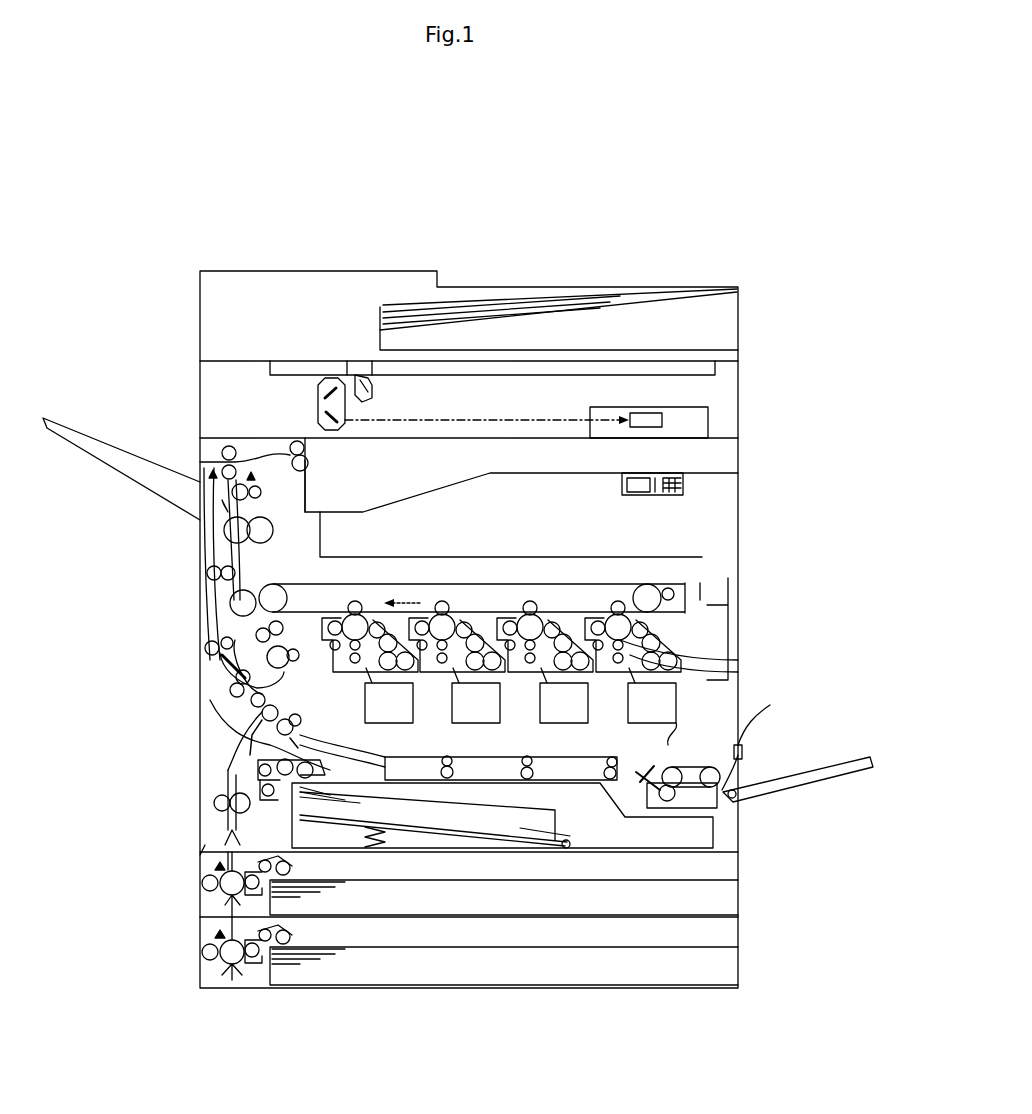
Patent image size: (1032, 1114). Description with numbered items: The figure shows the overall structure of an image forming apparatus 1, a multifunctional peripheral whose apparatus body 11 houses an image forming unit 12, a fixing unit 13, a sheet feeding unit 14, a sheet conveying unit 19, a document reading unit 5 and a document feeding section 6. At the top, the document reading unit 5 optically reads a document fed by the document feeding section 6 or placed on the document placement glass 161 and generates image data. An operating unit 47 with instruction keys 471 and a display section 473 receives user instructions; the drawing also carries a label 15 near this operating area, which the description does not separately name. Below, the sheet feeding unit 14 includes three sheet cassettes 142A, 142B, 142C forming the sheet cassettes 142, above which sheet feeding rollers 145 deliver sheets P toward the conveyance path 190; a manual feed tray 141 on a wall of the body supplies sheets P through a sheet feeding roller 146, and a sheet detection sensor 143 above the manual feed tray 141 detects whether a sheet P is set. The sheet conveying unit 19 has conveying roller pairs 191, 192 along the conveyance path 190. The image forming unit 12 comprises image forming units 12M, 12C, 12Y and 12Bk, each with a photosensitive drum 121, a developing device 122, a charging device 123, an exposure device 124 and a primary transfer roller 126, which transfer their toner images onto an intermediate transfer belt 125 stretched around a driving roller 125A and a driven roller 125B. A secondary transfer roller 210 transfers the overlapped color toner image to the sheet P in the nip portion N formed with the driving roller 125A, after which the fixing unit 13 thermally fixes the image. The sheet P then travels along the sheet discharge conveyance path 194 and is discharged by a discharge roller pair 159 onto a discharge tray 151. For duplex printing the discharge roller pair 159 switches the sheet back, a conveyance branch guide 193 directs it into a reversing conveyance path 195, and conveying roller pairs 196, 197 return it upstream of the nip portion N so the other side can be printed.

The image forming apparatus 1 is at (815, 343).
The document reading unit 5 is at (185, 383).
The document feeding section 6 is at (559, 281).
The document placement glass 161 is at (607, 358).
The apparatus body 11 is at (745, 472).
The discharge tray 151 is at (340, 505).
The operation panel 15 is at (671, 469).
The display section 473 is at (628, 480).
The instruction keys 471 is at (672, 478).
The operating unit 47 is at (688, 487).
The image forming unit 12 is at (540, 573).
The intermediate transfer belt 125 is at (497, 571).
The driving roller 125A is at (298, 568).
The driven roller 125B is at (655, 590).
The primary transfer roller 126 is at (614, 604).
The image forming unit for black 12Bk is at (360, 604).
The image forming unit for yellow 12Y is at (447, 604).
The image forming unit for cyan 12C is at (537, 604).
The image forming unit for magenta 12M is at (633, 612).
The photosensitive drum 121 is at (670, 640).
The developing device 122 is at (668, 656).
The charging device 123 is at (632, 686).
The exposure device 124 is at (685, 738).
The fixing unit 13 is at (200, 518).
The sheet feeding unit 14 is at (760, 752).
The manual feed tray 141 is at (770, 750).
The sheet detection sensor 143 is at (745, 750).
The sheet feeding roller 146 is at (770, 740).
The sheet cassettes 142 is at (542, 884).
The sheet cassette 142A is at (715, 835).
The sheet cassette 142B is at (715, 900).
The sheet cassette 142C is at (715, 966).
The sheet feeding rollers 145 is at (205, 950).
The discharge roller pair 159 is at (305, 450).
The sheet conveying unit 19 is at (233, 584).
The conveyance path 190 is at (232, 608).
The conveying roller pair 191 is at (216, 674).
The conveying roller pair 192 is at (271, 513).
The conveyance branch guide 193 is at (224, 466).
The sheet discharge conveyance path 194 is at (228, 446).
The reversing conveyance path 195 is at (222, 578).
The conveying roller pair 196 is at (207, 575).
The conveying roller pair 197 is at (205, 652).
The secondary transfer roller 210 is at (240, 610).
The nip portion N is at (210, 570).
The sheet P is at (552, 795).